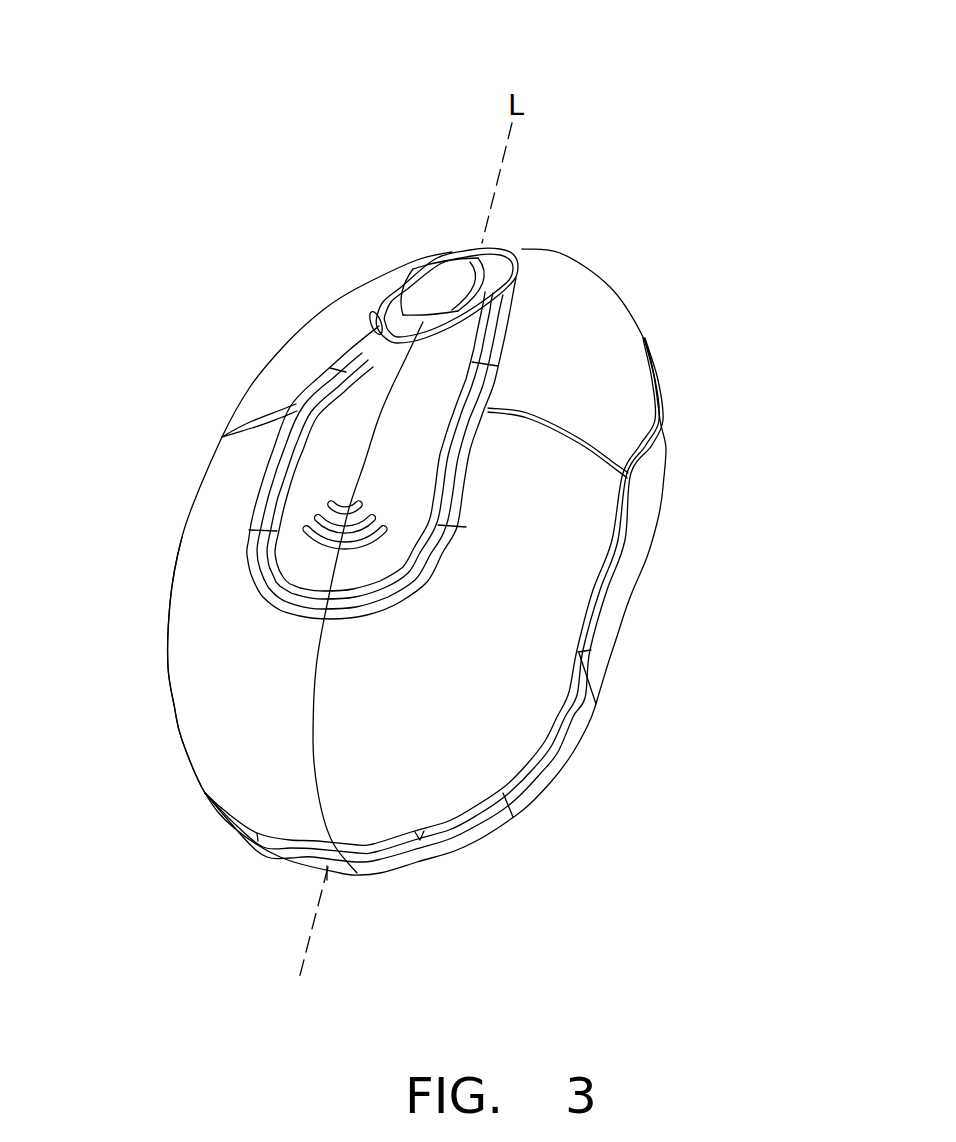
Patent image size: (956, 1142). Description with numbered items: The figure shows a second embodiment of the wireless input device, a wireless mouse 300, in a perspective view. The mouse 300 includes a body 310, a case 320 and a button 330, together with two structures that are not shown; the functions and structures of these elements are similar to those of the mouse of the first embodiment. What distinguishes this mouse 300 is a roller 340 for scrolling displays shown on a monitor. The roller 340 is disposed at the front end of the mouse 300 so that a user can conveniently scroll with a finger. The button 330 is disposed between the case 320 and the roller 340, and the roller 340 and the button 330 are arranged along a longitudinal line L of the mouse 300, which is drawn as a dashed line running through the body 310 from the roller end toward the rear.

The wireless mouse 300 is at (685, 75).
The body 310 is at (665, 400).
The case 320 is at (190, 615).
The button 330 is at (352, 375).
The roller 340 is at (444, 264).